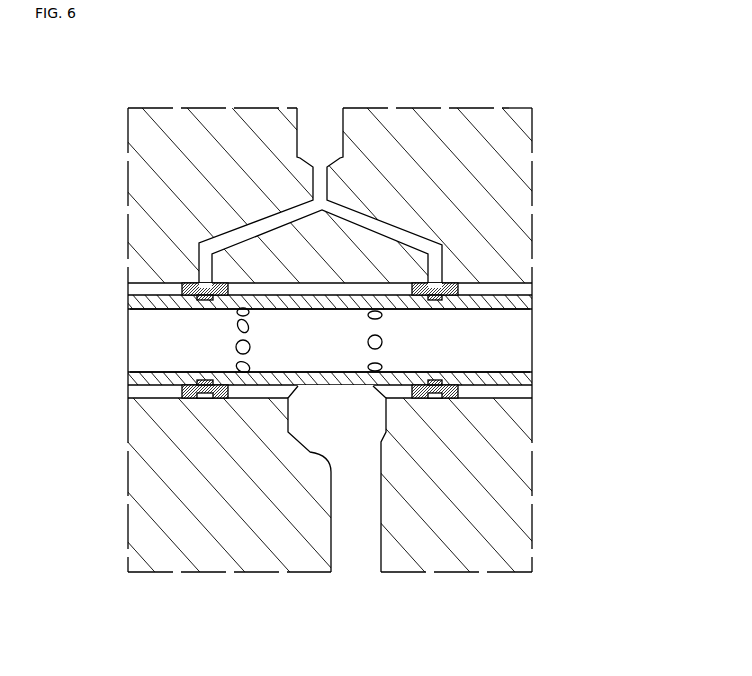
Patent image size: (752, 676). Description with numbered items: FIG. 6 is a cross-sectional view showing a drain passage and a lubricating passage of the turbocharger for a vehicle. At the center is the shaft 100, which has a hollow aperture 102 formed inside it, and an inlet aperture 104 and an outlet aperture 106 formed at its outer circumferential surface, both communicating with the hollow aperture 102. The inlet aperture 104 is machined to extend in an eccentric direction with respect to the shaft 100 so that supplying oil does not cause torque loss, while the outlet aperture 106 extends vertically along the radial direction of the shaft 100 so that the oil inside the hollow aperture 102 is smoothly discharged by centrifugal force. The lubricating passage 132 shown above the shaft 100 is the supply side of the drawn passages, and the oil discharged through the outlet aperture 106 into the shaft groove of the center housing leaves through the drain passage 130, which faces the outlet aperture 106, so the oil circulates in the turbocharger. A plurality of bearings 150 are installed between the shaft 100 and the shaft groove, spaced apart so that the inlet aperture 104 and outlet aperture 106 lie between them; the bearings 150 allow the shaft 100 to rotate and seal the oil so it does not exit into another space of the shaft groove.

The shaft 100 is at (532, 376).
The hollow aperture 102 is at (494, 344).
The inlet aperture 104 is at (243, 347).
The outlet aperture 106 is at (380, 340).
The drain passage 130 is at (358, 565).
The inlet 132 is at (321, 122).
The bearings 150 is at (447, 290).